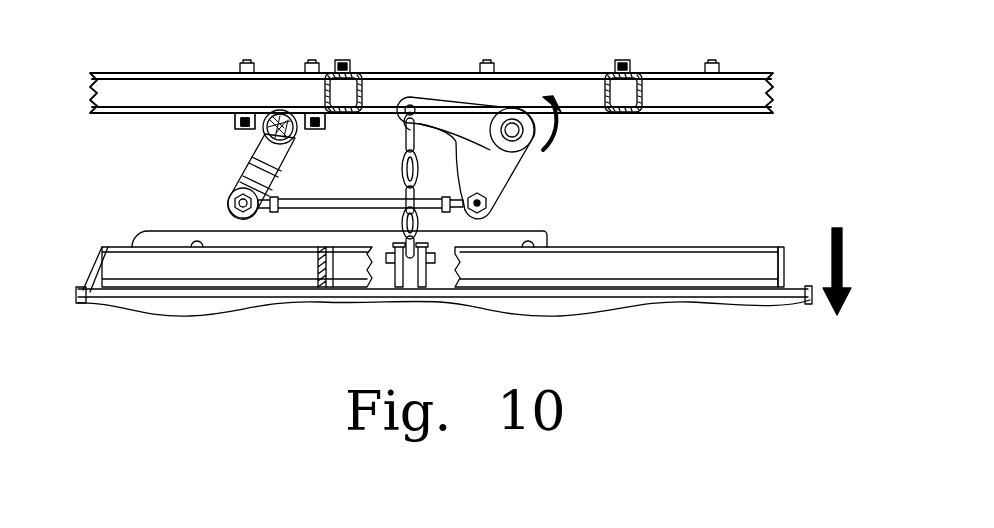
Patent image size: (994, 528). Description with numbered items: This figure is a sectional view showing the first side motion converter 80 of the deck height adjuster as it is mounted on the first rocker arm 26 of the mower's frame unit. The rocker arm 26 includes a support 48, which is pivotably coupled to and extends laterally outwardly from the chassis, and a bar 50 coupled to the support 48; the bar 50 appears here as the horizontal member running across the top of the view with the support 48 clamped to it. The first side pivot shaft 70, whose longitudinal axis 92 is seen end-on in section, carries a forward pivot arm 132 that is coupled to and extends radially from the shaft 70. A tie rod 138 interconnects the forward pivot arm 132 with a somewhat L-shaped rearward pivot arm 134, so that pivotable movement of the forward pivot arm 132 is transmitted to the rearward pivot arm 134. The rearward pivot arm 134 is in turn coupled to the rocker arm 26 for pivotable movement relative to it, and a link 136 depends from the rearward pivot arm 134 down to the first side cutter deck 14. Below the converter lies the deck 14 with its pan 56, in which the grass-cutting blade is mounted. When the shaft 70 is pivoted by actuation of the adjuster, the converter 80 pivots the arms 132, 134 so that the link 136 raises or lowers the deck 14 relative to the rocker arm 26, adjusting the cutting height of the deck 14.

The first rocker arm 26 is at (676, 70).
The bar 50 is at (722, 92).
The support 48 is at (376, 88).
The longitudinal axis 92 is at (296, 105).
The link 136 is at (402, 144).
The tie rod 138 is at (372, 186).
The forward pivot arm 132 is at (245, 170).
The first side pivot shaft 70 is at (290, 143).
The rearward pivot arm 134 is at (497, 183).
The first side motion converter 80 is at (612, 194).
The first side cutter deck 14 is at (658, 284).
The pan 56 is at (738, 280).